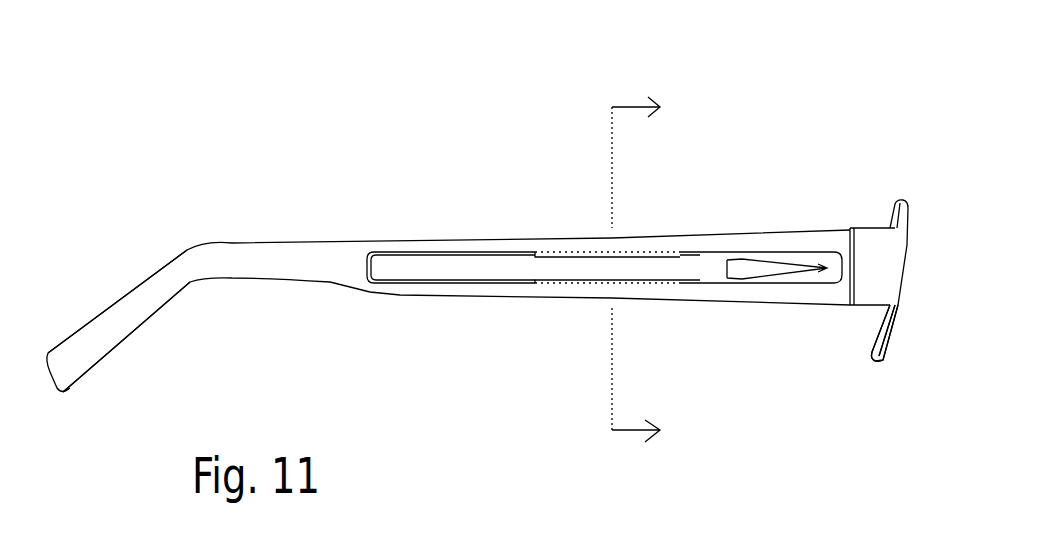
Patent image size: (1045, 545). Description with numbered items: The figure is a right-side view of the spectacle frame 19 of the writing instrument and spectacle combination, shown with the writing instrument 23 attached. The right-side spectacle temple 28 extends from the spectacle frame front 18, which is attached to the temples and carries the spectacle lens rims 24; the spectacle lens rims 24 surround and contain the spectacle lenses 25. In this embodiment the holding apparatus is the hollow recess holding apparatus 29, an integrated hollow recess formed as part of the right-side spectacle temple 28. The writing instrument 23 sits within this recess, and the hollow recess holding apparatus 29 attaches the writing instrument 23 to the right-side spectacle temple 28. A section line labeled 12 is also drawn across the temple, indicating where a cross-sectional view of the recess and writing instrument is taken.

The spectacle frame 19 is at (418, 100).
The right-side spectacle temple 28 is at (343, 263).
The writing instrument 23 is at (455, 267).
The hollow recess holding apparatus 29 is at (592, 252).
The spectacle lens rims 24 is at (873, 332).
The spectacle lenses 25 is at (893, 318).
The spectacle frame front 18 is at (905, 165).
The section line 12- 12 is at (657, 269).